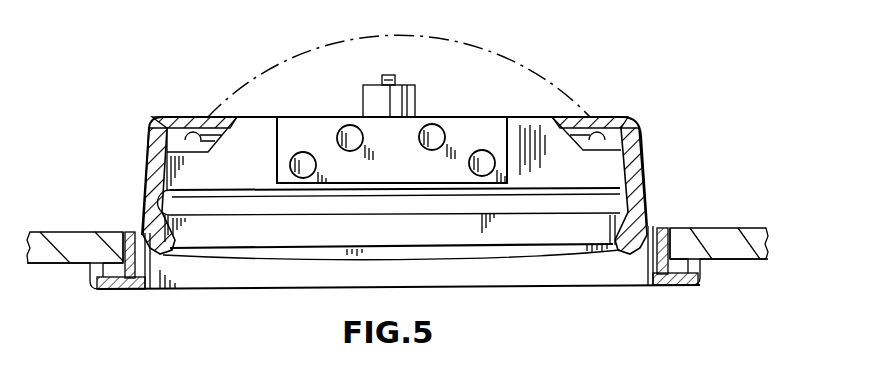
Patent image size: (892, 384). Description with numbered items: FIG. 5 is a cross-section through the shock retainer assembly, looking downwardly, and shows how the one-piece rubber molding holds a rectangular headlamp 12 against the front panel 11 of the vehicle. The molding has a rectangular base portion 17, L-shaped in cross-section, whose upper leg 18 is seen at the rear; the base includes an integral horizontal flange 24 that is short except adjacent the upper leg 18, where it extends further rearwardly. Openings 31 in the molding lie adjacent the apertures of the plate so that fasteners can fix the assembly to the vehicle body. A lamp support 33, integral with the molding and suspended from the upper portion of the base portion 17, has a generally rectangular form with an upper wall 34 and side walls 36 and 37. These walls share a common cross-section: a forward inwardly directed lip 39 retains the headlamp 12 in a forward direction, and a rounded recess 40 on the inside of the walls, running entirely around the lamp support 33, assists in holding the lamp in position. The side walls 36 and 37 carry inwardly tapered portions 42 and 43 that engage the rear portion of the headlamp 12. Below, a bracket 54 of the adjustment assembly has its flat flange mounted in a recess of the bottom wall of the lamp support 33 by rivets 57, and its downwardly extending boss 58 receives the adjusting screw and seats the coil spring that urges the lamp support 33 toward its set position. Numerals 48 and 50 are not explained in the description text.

The front panel 11 is at (735, 242).
The rectangular headlamp 12 is at (259, 68).
The base portion 17 is at (301, 290).
The upper leg 18 is at (344, 379).
The horizontal flange 24 is at (128, 292).
The openings 31 is at (174, 379).
The lamp support 33 is at (147, 152).
The upper wall 34 is at (410, 379).
The side wall 36 is at (642, 187).
The side wall 37 is at (153, 183).
The forward inwardly directed lip 39 is at (228, 252).
The rounded recess 40 is at (643, 203).
The inwardly tapered portion 42 is at (598, 132).
The inwardly tapered portion 43 is at (186, 146).
The bottom member 48 is at (493, 379).
The bottom element 50 is at (589, 382).
The bracket 54 is at (375, 100).
The rivets 57 is at (432, 128).
The boss 58 is at (485, 130).